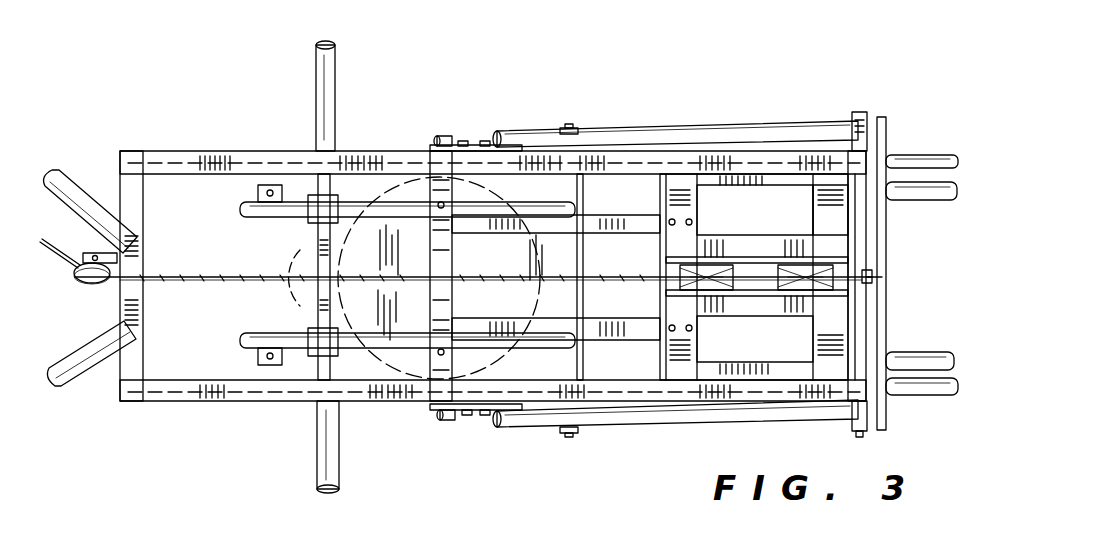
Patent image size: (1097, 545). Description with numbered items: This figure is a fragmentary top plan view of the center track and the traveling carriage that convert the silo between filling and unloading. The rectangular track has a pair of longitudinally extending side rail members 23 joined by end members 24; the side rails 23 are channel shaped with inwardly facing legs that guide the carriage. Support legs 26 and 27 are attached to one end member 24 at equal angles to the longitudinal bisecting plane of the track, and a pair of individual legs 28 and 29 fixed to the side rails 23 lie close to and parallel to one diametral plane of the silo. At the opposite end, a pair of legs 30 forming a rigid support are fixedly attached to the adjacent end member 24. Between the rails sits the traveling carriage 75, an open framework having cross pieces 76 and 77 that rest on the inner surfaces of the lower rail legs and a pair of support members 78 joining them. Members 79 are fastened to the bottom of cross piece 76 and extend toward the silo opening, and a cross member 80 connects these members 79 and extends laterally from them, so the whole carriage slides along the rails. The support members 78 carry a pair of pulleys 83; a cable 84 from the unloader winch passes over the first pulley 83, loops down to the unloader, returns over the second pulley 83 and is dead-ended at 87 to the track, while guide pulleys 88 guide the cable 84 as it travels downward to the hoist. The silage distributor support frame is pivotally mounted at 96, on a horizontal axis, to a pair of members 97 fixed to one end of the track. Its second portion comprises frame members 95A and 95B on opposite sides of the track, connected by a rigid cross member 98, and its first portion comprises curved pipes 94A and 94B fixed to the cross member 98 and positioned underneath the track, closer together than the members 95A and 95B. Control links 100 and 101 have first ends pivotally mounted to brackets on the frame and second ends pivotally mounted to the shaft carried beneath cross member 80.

The side rail members 23 is at (238, 402).
The end members 24 is at (106, 176).
The support leg 26 is at (83, 368).
The support leg 27 is at (72, 175).
The individual leg 28 is at (337, 93).
The individual leg 29 is at (318, 448).
The legs 30 is at (913, 357).
The traveling carriage 75 is at (687, 353).
The cross piece 76 is at (700, 200).
The cross piece 77 is at (835, 216).
The support members 78 is at (765, 252).
The members 79 is at (640, 217).
The cross member 80 is at (440, 263).
The pulleys 83 is at (722, 273).
The cable 84 is at (640, 277).
The dead end 87 is at (873, 273).
The guide pulleys 88 is at (80, 263).
The curved pipe 94A is at (240, 202).
The curved pipe 94B is at (240, 341).
The frame member 95A is at (705, 125).
The frame member 95B is at (768, 425).
The pivot 96 is at (860, 112).
The members 97 is at (887, 133).
The rigid cross member 98 is at (583, 363).
The control link 100 is at (453, 423).
The control link 101 is at (462, 140).